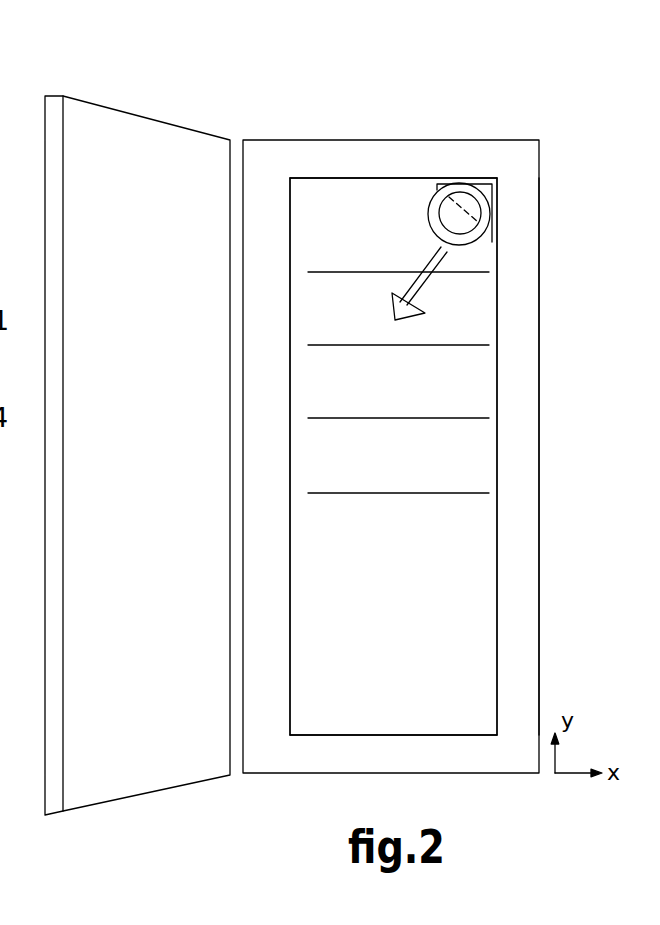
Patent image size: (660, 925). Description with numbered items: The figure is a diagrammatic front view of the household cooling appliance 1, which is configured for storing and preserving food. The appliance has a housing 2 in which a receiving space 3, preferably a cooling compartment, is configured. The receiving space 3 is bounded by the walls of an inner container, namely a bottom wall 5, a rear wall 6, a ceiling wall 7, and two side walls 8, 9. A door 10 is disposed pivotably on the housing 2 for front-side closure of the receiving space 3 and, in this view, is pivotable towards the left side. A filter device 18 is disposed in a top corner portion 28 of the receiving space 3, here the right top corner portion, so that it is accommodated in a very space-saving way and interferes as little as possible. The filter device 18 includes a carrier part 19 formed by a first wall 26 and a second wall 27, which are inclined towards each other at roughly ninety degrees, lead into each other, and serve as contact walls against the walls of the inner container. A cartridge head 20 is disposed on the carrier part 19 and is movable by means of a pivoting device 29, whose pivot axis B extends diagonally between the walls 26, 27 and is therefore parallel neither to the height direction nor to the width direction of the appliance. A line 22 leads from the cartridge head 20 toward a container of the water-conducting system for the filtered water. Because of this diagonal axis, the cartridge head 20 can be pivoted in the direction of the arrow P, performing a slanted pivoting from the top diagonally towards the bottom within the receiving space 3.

The household cooling appliance 1 is at (302, 109).
The housing 2 is at (550, 433).
The receiving space 3 is at (393, 456).
The bottom wall 5 is at (327, 733).
The rear wall 6 is at (477, 630).
The ceiling wall 7 is at (345, 181).
The side wall 8 is at (496, 523).
The side wall 9 is at (290, 565).
The door 10 is at (133, 114).
The filter device 18 is at (415, 226).
The carrier part 19 is at (515, 183).
The cartridge head 20 is at (433, 188).
The line 22 is at (470, 183).
The first wall 26 is at (448, 183).
The second wall 27 is at (497, 223).
The corner portion 28 is at (503, 165).
The pivoting device 29 is at (495, 255).
The pivot axis B is at (497, 207).
The arrow P is at (432, 294).